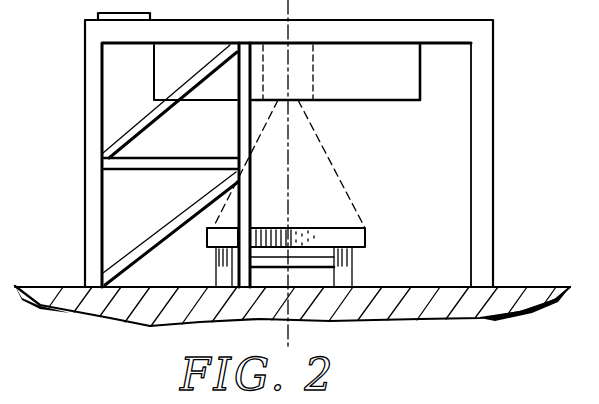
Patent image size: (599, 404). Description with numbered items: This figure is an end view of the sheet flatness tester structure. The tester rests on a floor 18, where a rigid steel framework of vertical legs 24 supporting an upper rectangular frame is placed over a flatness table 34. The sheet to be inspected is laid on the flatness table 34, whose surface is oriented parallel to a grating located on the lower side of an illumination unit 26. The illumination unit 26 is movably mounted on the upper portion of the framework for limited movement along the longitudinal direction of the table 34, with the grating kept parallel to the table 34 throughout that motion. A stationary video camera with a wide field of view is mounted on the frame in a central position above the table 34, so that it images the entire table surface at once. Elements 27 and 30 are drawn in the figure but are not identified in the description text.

The floor 18 is at (435, 287).
The vertical legs 24 is at (85, 163).
The illumination unit 26 is at (420, 97).
The top cover 27 is at (343, 19).
The light source 30 is at (312, 90).
The flatness table 34 is at (367, 241).